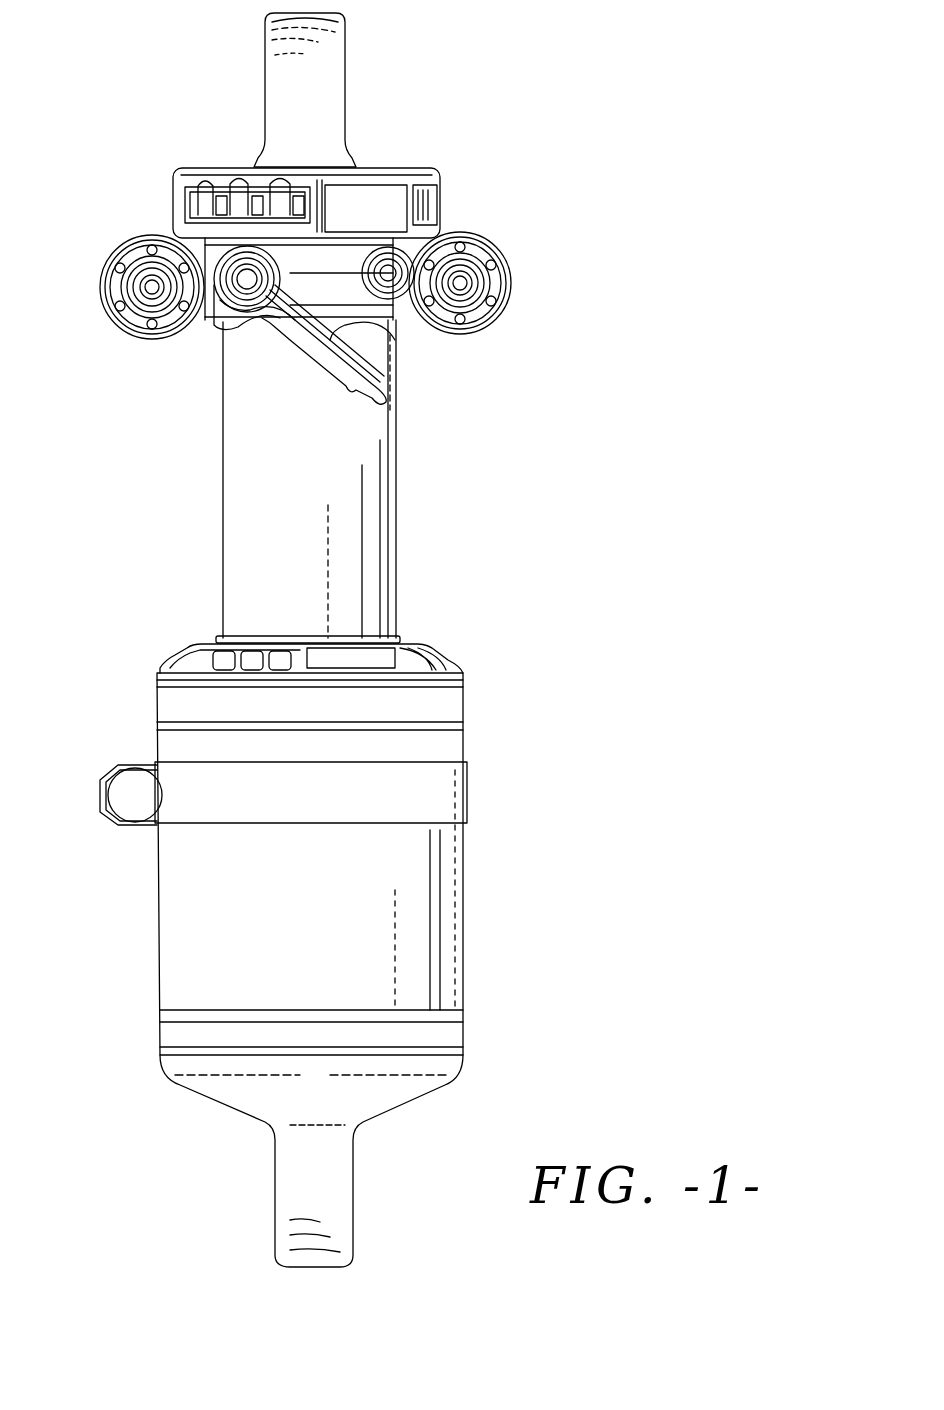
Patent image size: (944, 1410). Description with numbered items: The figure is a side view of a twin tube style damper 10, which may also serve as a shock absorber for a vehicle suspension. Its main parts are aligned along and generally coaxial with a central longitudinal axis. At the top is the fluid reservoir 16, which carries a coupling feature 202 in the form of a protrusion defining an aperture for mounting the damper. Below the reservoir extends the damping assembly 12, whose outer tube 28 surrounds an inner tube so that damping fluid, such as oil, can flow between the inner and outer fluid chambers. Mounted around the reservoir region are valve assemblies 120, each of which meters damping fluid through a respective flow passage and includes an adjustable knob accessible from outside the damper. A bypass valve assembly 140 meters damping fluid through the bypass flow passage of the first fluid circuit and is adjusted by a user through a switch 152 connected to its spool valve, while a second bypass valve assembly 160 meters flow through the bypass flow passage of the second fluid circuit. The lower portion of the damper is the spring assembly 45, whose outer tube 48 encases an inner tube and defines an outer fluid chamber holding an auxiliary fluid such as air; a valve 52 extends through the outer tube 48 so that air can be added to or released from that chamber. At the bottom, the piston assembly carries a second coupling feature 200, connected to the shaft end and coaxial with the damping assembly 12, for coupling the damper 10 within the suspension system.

The twin tube style damper 10 is at (636, 170).
The damping assembly 12 is at (412, 500).
The fluid reservoir 16 is at (448, 196).
The outer tube 28 is at (377, 595).
The spring assembly 45 is at (490, 855).
The outer tube 48 is at (455, 960).
The valve 52 is at (135, 805).
The valve assembly 120 is at (148, 318).
The bypass valve assembly 140 is at (240, 310).
The switch 152 is at (330, 335).
The bypass valve assembly 160 is at (436, 280).
The coupling feature 200 is at (372, 1198).
The coupling feature 202 is at (243, 80).